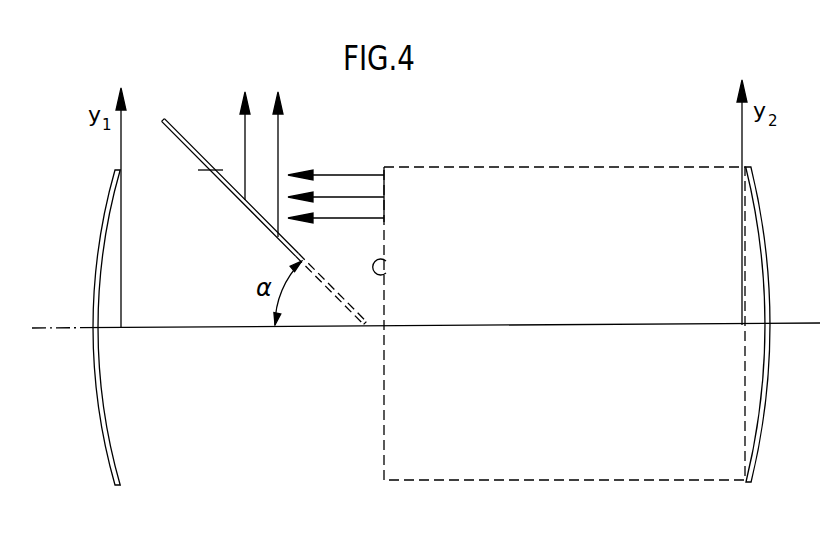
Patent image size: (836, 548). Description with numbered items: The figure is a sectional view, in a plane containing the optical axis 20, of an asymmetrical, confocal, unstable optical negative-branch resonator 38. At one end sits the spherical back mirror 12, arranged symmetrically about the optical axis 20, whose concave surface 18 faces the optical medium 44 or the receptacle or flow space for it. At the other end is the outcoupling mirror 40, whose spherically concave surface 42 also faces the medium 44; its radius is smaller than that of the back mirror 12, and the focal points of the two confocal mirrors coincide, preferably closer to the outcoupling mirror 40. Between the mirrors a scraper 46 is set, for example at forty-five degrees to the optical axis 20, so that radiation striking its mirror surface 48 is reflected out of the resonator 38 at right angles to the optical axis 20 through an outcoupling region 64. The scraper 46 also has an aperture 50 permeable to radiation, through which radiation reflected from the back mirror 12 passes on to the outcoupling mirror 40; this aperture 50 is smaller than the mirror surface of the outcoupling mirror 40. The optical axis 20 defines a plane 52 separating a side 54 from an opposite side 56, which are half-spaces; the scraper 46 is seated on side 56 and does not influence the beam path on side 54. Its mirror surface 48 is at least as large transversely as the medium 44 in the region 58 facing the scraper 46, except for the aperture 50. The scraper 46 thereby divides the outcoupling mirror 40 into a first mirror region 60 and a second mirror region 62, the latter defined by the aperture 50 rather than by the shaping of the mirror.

The back mirror 12 is at (757, 452).
The concave surface 18 is at (765, 385).
The optical axis 20 is at (562, 323).
The resonator 38 is at (548, 112).
The outcoupling mirror 40 is at (110, 461).
The spherically concave surface 42 is at (100, 397).
The optical medium 44 is at (612, 167).
The scraper 46 is at (238, 200).
The mirror surface 48 is at (253, 207).
The aperture 50 is at (330, 292).
The plane 52 is at (63, 333).
The side 54 is at (74, 445).
The opposite side 56 is at (74, 261).
The region 58 is at (386, 261).
The first mirror region 60 is at (110, 443).
The second mirror region 62 is at (103, 228).
The outcoupling region 64 is at (230, 168).